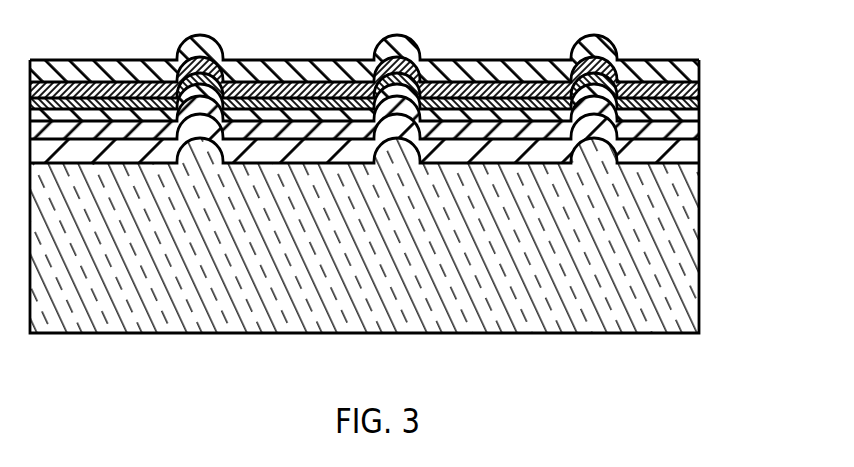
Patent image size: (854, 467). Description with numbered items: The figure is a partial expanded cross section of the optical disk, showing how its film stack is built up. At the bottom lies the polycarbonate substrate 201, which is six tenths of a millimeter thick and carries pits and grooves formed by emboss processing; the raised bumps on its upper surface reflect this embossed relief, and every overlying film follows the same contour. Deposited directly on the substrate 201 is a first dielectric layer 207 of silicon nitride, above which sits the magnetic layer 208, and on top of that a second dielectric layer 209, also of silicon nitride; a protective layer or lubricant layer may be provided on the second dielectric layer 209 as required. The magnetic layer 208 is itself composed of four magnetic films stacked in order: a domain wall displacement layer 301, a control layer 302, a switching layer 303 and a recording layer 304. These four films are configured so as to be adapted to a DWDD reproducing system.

The polycarbonate substrate 201 is at (695, 245).
The first dielectric layer 207 is at (694, 152).
The magnetic layer 208 is at (429, 99).
The second dielectric layer 209 is at (689, 58).
The domain wall displacement layer 301 is at (700, 137).
The control layer 302 is at (700, 120).
The switching layer 303 is at (700, 103).
The recording layer 304 is at (402, 60).